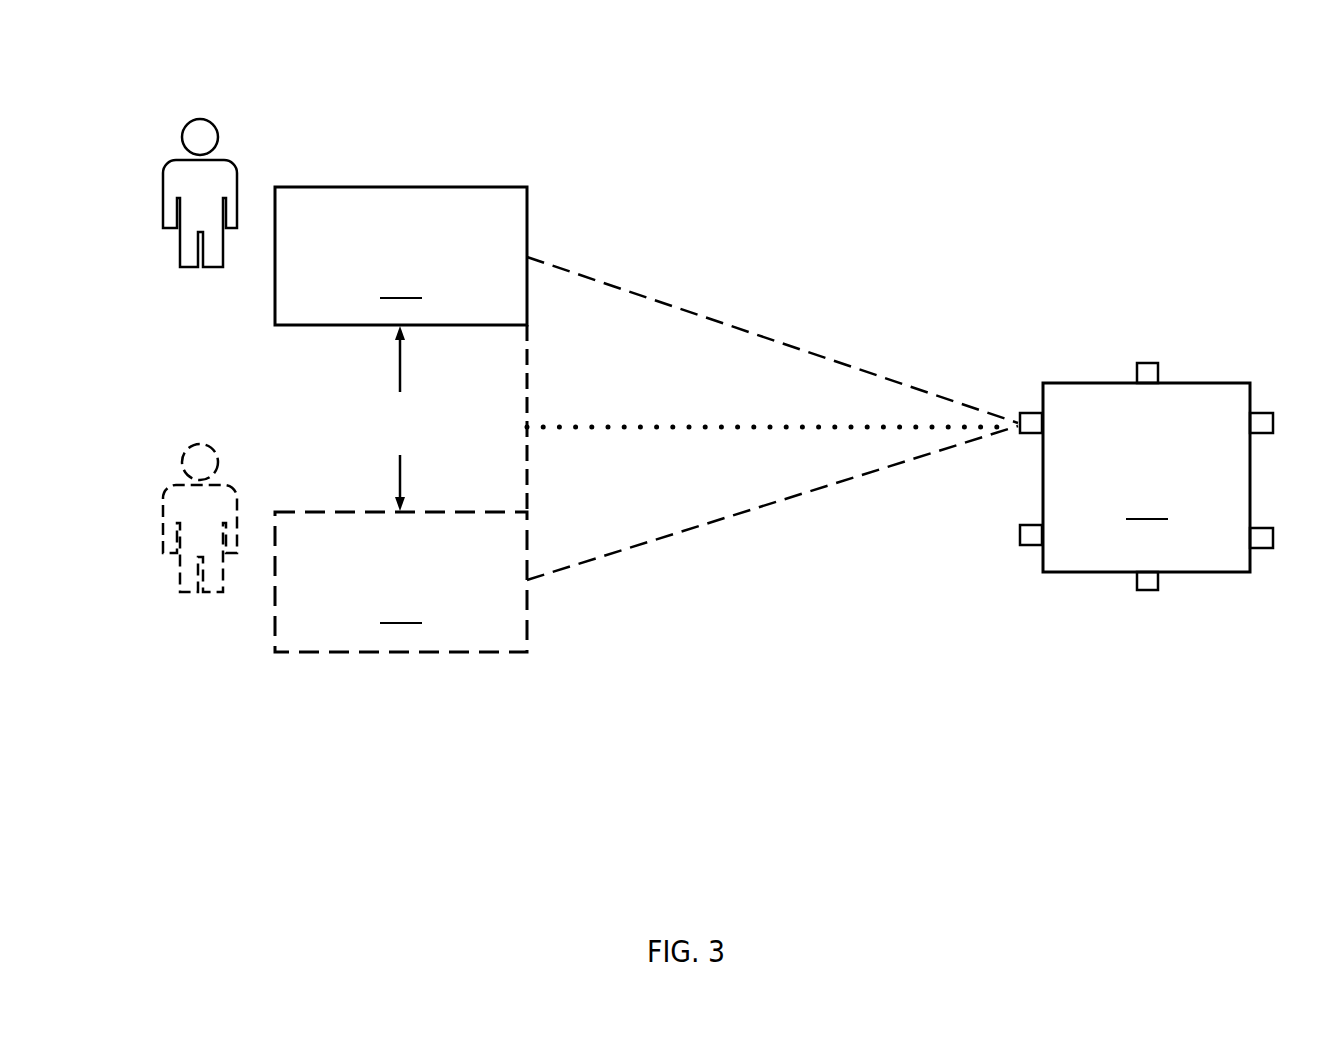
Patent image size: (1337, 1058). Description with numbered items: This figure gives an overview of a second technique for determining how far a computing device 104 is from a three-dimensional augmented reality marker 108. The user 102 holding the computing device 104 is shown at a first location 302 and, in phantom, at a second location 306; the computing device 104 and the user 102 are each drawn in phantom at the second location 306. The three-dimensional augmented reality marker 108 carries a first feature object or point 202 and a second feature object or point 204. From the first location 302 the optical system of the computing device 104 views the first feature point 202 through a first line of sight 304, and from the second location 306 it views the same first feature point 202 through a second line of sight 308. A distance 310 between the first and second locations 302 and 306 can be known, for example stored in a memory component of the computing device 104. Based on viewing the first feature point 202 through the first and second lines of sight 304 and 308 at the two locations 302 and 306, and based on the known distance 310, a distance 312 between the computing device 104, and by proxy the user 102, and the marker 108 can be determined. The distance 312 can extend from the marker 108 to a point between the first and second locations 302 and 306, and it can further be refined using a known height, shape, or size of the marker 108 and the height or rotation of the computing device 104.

The user 102 is at (231, 160).
The computing device 104 is at (401, 419).
The 3D AR marker 108 is at (1077, 475).
The first feature object or point 202 is at (1032, 412).
The second feature object or point 204 is at (1030, 547).
The first location 302 is at (518, 124).
The first line of sight 304 is at (672, 305).
The second location 306 is at (513, 717).
The second line of sight 308 is at (677, 532).
The distance between first and second locations 310 is at (400, 418).
The distance between computing device and 3D AR marker 312 is at (560, 428).